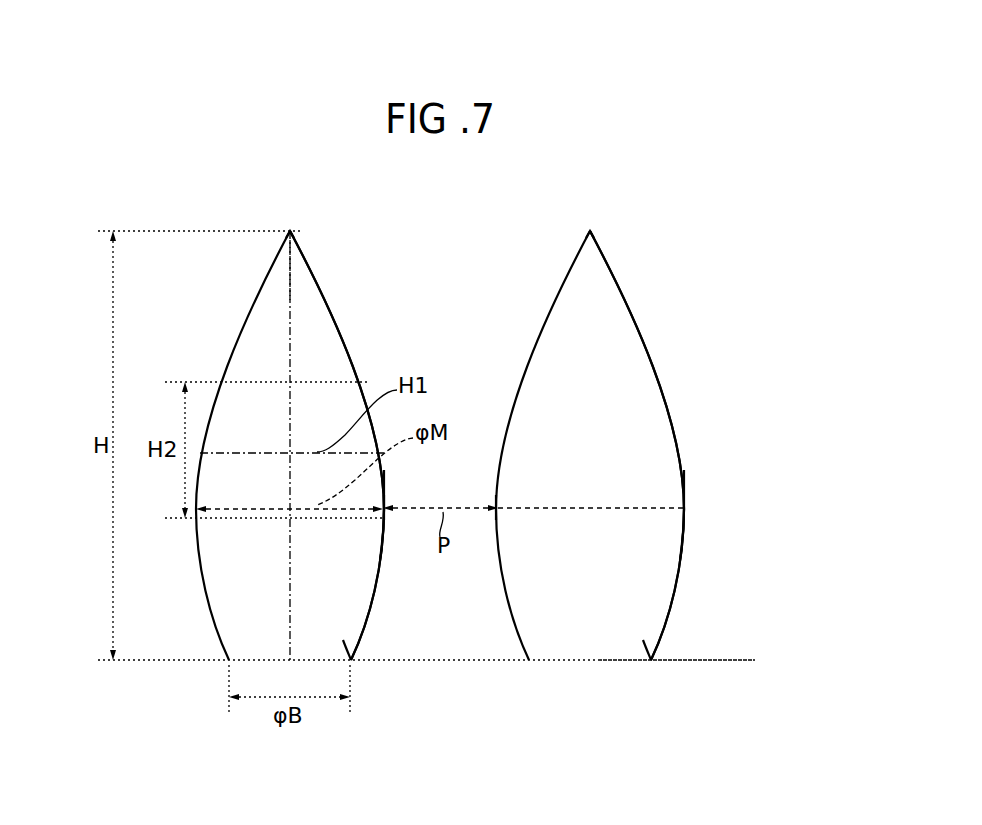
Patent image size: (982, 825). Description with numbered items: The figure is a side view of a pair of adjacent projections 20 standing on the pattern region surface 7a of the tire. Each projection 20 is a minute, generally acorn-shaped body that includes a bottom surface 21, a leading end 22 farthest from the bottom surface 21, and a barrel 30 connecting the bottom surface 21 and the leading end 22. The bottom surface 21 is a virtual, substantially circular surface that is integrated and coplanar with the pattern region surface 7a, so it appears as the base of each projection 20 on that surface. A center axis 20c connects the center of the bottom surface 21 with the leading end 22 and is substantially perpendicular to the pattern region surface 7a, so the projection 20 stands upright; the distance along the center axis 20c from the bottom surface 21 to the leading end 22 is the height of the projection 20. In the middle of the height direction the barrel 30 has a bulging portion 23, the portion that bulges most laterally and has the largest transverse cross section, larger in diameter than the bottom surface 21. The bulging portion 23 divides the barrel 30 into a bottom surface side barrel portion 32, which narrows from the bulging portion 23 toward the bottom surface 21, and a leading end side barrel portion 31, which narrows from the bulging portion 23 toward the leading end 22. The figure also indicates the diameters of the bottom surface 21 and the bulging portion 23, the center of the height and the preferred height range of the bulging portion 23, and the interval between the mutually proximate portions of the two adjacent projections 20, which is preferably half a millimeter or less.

The projection 20 is at (345, 298).
The center axis 20c is at (291, 285).
The bottom surface 21 is at (330, 660).
The leading end 22 is at (292, 229).
The bulging portion 23 is at (337, 506).
The barrel 30 is at (455, 314).
The leading end side barrel portion 31 is at (350, 345).
The bottom surface side barrel portion 32 is at (377, 592).
The pattern region surface 7a is at (743, 660).